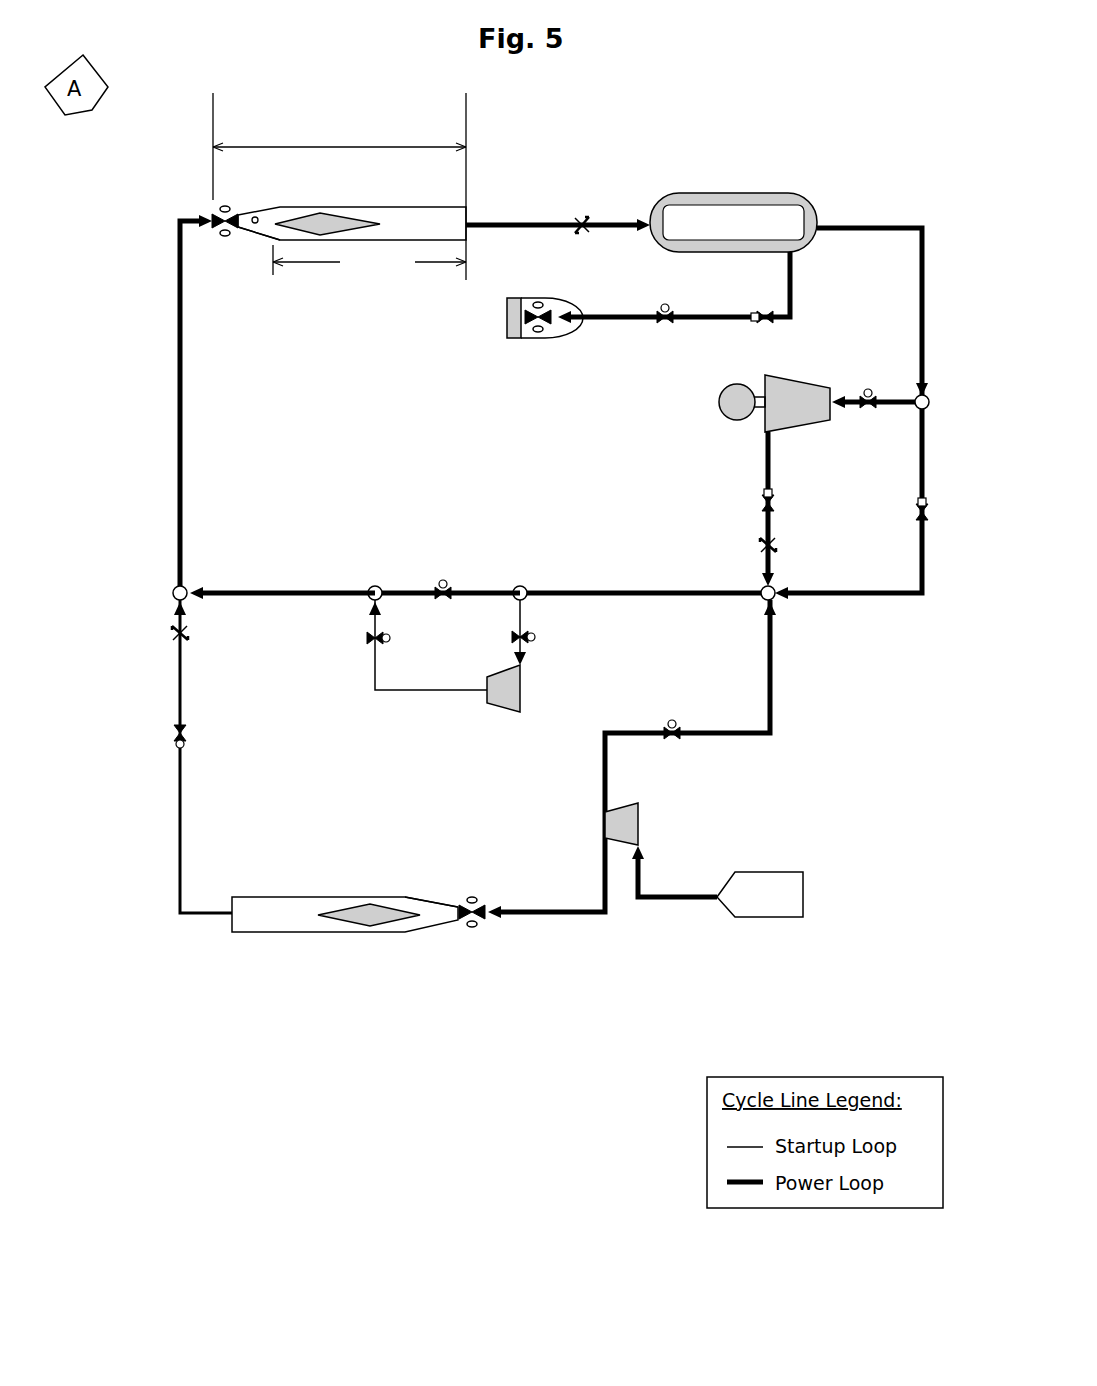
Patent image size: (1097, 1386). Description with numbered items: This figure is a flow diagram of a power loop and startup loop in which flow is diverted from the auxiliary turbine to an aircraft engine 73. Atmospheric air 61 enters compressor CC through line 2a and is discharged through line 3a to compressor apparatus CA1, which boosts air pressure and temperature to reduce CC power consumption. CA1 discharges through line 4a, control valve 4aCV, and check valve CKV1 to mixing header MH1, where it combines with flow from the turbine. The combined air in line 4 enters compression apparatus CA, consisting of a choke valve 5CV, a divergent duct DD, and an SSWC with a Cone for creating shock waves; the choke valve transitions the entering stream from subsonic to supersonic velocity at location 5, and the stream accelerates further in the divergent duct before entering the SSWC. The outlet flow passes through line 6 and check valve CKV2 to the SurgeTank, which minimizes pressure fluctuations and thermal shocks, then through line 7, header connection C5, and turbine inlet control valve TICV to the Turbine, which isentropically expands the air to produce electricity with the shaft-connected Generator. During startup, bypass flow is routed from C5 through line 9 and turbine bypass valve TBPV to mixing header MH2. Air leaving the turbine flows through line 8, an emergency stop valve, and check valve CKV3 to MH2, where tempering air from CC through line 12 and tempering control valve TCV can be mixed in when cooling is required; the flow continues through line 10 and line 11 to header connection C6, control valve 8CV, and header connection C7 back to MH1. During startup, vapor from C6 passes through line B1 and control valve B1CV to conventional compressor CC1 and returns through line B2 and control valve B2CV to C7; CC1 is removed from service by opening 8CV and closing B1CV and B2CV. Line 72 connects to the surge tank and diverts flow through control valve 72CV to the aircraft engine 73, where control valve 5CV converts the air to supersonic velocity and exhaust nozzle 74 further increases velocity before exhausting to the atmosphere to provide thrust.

The line 4 is at (186, 482).
The line 4a is at (178, 778).
The location 5 is at (252, 211).
The line 6 is at (528, 223).
The line 7 is at (890, 226).
The line 8 is at (776, 462).
The line 9 is at (926, 447).
The line 10 is at (745, 585).
The line 11 is at (300, 585).
The line 12 is at (774, 664).
The line 2a is at (658, 917).
The line 3a is at (568, 905).
The atmospheric air 61 is at (763, 935).
The line 72 is at (795, 306).
The aircraft engine 73 is at (566, 337).
The exhaust nozzle 74 is at (505, 325).
The compression apparatus CA is at (331, 126).
The compressor apparatus CA1 is at (296, 895).
The supersonic shock wave compressor SSWC is at (372, 263).
The cone Cone is at (302, 218).
The divergent duct DD is at (266, 242).
The choke valve 5CV is at (226, 237).
The check valve CKV1 is at (175, 631).
The check valve CKV2 is at (586, 218).
The check valve CKV3 is at (776, 541).
The control valve 72CV is at (658, 305).
The turbine inlet control valve TICV is at (867, 390).
The turbine bypass valve TBPV is at (917, 521).
The header connection C5 is at (914, 409).
The header connection C6 is at (527, 585).
The header connection C7 is at (380, 585).
The mixing header MH1 is at (188, 586).
The mixing header MH2 is at (778, 600).
The line B1 is at (526, 611).
The line B2 is at (433, 688).
The control valve B1CV is at (535, 641).
The control valve B2CV is at (368, 643).
The control valve 8CV is at (445, 583).
The tempering control valve TCV is at (673, 720).
The control valve 4aCV is at (195, 738).
The compressor CC is at (642, 832).
The conventional compressor CC1 is at (500, 711).
The turbine Turbine is at (816, 381).
The generator Generator is at (719, 409).
The surge tank SurgeTank is at (733, 222).